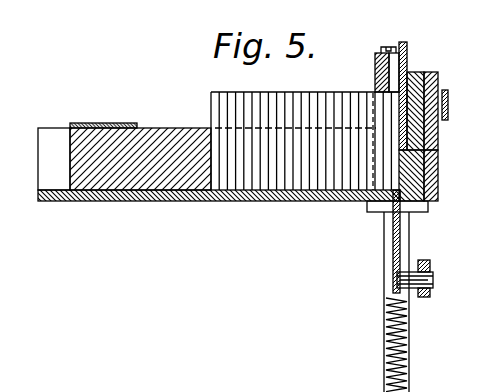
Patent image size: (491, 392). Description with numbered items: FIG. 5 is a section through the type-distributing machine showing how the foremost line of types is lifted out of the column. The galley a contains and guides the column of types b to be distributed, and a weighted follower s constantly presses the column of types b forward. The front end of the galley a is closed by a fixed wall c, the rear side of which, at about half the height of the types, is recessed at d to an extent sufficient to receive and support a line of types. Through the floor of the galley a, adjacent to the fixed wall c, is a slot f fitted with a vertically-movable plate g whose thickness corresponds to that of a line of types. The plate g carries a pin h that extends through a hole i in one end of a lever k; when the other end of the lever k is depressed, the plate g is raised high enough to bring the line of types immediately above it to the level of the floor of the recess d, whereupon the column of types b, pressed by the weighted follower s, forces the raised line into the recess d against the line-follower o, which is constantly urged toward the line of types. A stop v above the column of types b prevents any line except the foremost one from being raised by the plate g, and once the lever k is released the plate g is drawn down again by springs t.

The galley a is at (54, 159).
The weighted follower s is at (163, 146).
The column of types b is at (242, 107).
The stop v is at (378, 74).
The line-follower o is at (407, 50).
The recess d is at (407, 135).
The fixed wall c is at (417, 169).
The slot f is at (380, 205).
The vertically-movable plate g is at (395, 248).
The pin h is at (429, 266).
The hole i is at (428, 293).
The lever k is at (421, 297).
The springs t is at (387, 343).